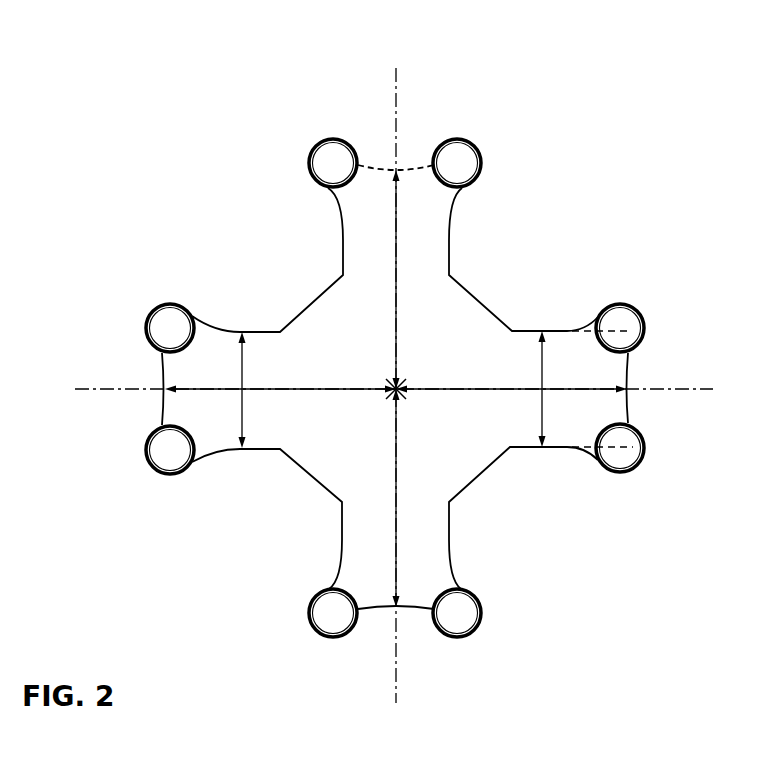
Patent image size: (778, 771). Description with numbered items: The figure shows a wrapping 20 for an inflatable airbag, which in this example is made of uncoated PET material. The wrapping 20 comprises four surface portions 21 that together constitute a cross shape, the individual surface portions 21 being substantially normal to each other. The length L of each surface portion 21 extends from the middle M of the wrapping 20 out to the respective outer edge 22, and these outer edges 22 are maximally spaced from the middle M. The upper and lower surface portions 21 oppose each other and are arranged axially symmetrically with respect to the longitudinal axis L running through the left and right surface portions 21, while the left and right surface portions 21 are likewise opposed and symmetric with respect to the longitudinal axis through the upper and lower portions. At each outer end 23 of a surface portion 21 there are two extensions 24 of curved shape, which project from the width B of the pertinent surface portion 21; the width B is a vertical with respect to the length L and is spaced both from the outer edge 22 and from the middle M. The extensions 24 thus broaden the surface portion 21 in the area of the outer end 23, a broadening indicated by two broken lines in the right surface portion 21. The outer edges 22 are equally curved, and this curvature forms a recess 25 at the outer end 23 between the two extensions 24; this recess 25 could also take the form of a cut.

The wrapping 20 is at (407, 372).
The surface portion 21 is at (452, 205).
The outer edge 22 is at (414, 170).
The outer end 23 is at (365, 190).
The extension 24 is at (332, 160).
The recess 25 is at (630, 396).
The length L is at (398, 268).
The width B is at (245, 403).
The middle M is at (396, 389).